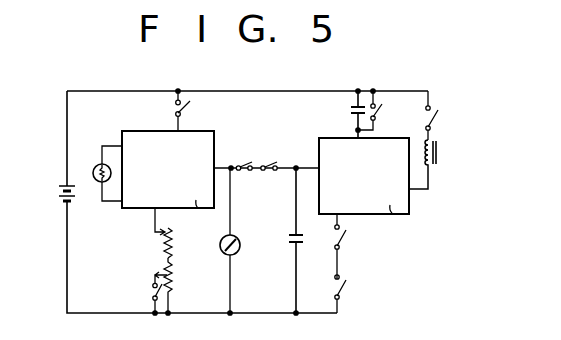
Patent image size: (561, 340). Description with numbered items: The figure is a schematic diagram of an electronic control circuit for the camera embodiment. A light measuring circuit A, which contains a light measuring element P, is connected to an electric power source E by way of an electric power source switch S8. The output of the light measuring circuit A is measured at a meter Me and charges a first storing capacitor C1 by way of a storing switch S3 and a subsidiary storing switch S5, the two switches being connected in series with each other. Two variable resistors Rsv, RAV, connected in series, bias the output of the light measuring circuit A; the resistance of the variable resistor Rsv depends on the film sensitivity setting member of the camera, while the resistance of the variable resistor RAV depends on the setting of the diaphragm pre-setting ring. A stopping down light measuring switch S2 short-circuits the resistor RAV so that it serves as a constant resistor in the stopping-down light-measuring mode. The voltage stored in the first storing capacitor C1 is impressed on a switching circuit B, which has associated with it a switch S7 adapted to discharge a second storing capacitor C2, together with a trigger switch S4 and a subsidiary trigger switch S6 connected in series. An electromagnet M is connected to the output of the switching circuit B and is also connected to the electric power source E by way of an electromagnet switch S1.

The electric power source E is at (56, 190).
The light measuring element P is at (100, 173).
The light measuring circuit A is at (168, 181).
The electric power source switch S8 is at (196, 111).
The subsidiary storing switch S5 is at (241, 158).
The storing switch S3 is at (273, 158).
The meter Me is at (244, 240).
The first storing capacitor C1 is at (288, 240).
The variable resistor Rsv is at (179, 235).
The variable resistor RAV is at (185, 285).
The stopping down light measuring switch S2 is at (145, 292).
The switching circuit B is at (364, 191).
The second storing capacitor C2 is at (343, 114).
The switch S7 is at (378, 110).
The electromagnet switch S1 is at (444, 115).
The electromagnet M is at (433, 164).
The trigger switch S4 is at (351, 244).
The subsidiary trigger switch S6 is at (351, 294).